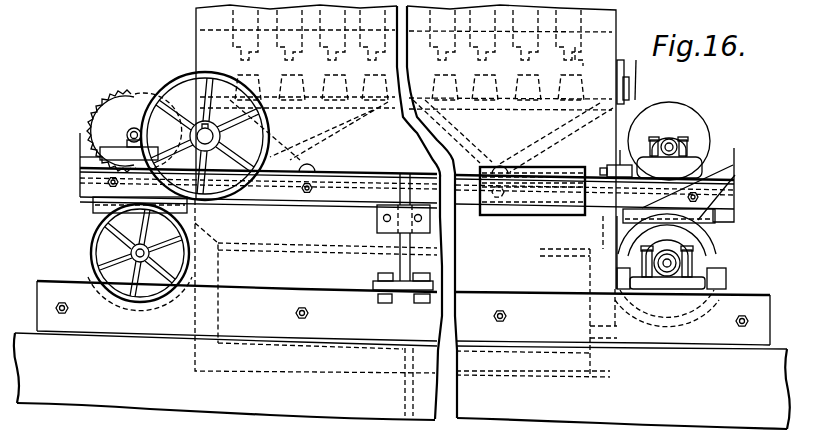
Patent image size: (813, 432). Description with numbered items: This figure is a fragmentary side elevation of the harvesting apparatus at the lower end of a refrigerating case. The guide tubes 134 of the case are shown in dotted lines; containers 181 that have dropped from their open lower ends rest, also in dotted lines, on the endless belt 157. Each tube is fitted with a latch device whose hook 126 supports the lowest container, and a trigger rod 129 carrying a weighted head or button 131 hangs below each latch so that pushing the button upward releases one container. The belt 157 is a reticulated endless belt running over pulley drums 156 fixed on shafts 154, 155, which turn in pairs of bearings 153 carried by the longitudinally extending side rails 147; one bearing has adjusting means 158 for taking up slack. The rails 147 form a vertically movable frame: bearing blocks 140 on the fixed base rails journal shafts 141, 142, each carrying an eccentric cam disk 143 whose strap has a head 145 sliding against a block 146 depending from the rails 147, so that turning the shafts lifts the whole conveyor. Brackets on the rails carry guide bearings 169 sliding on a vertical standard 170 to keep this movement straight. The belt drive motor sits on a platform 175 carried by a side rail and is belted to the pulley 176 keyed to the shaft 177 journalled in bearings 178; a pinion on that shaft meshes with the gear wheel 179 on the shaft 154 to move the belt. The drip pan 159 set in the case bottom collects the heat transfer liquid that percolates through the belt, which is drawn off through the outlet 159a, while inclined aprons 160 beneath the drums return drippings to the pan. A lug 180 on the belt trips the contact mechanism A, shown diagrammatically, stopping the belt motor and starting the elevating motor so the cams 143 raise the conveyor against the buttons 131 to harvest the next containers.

The hook 126 is at (367, 71).
The trigger rod 129 is at (578, 51).
The weighted head or button 131 is at (443, 70).
The guide tubes 134 is at (572, 22).
The bearing blocks 140 is at (132, 253).
The shaft 141 is at (112, 272).
The shaft 142 is at (677, 231).
The eccentric cam disk 143 is at (98, 227).
The head 145 is at (734, 213).
The block 146 is at (734, 180).
The side rails 147 is at (278, 192).
The bearings 153 is at (110, 150).
The shaft 154 is at (114, 92).
The shaft 155 is at (672, 146).
The pulley drums 156 is at (134, 98).
The endless belt 157 is at (628, 105).
The adjusting means 158 is at (617, 163).
The drip pan 159 is at (683, 170).
The outlet 159a is at (628, 364).
The apron 160 is at (82, 157).
The guide bearings 169 is at (432, 222).
The vertical standard 170 is at (402, 186).
The platform 175 is at (560, 157).
The pulley 176 is at (188, 70).
The shaft 177 is at (222, 135).
The bearings 178 is at (232, 150).
The gear wheel 179 is at (100, 115).
The lug 180 is at (178, 77).
The containers 181 is at (235, 62).
The contact mechanism A is at (633, 73).